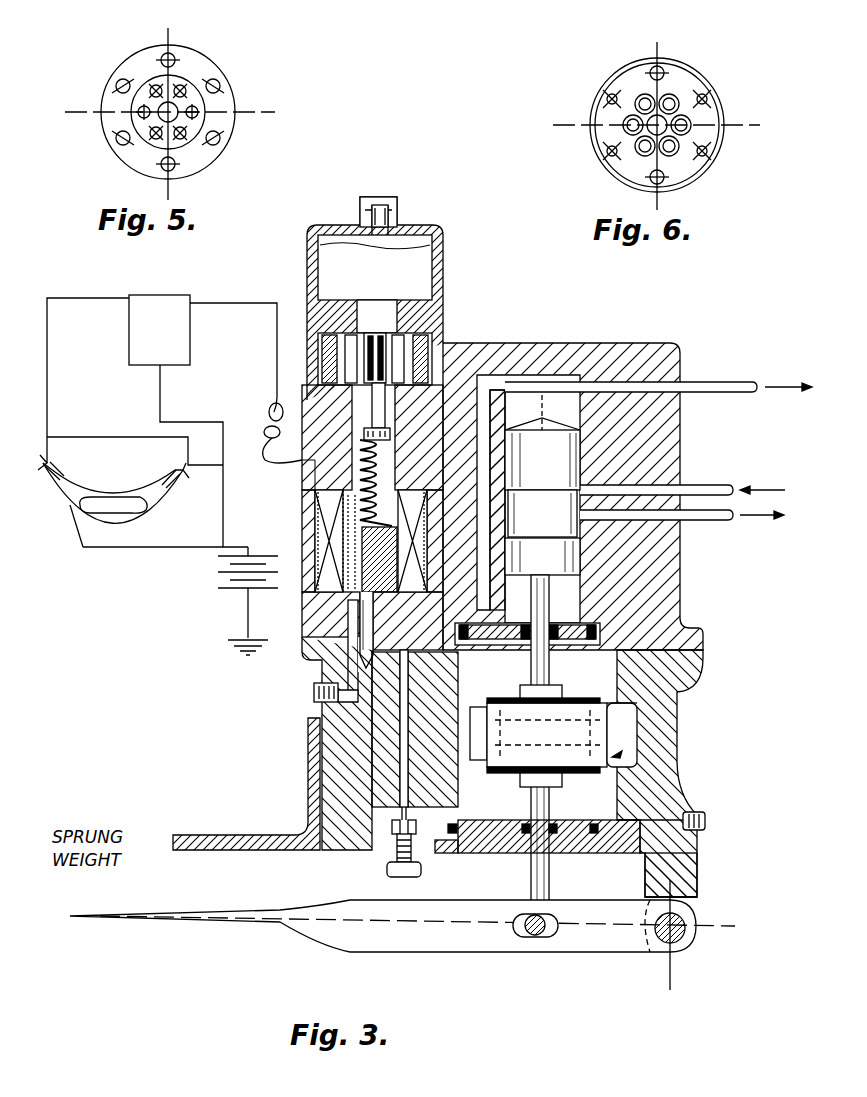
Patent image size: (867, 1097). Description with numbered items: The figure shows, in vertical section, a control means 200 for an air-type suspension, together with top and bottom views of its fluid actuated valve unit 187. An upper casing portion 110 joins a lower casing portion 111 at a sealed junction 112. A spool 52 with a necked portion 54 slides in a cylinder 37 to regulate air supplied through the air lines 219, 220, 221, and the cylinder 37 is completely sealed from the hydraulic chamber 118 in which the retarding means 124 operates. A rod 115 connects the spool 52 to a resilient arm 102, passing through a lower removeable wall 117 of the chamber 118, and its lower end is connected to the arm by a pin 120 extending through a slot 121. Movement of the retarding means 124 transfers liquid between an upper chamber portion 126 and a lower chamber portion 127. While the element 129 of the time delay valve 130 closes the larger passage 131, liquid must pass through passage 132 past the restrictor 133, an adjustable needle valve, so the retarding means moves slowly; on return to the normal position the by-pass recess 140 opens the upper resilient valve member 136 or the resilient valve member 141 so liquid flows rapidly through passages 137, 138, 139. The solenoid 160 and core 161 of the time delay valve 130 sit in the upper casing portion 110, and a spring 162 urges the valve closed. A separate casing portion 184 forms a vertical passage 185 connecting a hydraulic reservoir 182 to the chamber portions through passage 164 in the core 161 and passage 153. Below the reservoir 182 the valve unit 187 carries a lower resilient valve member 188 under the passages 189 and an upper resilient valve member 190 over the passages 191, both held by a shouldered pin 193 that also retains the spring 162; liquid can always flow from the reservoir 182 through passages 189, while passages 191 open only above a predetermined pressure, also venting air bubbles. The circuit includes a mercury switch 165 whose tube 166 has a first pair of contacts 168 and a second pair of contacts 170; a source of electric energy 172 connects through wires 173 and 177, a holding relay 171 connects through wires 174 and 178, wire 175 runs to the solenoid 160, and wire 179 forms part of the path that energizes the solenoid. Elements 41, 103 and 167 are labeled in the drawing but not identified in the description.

In FIG. 5, the fluid actuated valve unit 187 is at (215, 50).
In FIG. 6, the fluid actuated valve unit 187 is at (708, 80).
In FIG. 3, the fluid actuated valve unit 187 is at (440, 345).
In FIG. 5, the passages 189 is at (123, 86).
In FIG. 6, the passages 189 is at (604, 100).
In FIG. 3, the passages 189 is at (325, 350).
In FIG. 5, the shouldered pin 193 is at (180, 109).
In FIG. 6, the shouldered pin 193 is at (668, 118).
In FIG. 3, the shouldered pin 193 is at (373, 405).
In FIG. 5, the upper resilient valve member 190 is at (200, 124).
In FIG. 3, the upper resilient valve member 190 is at (400, 300).
In FIG. 5, the passages 191 is at (150, 135).
In FIG. 6, the passages 191 is at (626, 130).
In FIG. 3, the passages 191 is at (360, 320).
In FIG. 6, the lower resilient valve member 188 is at (680, 160).
In FIG. 3, the lower resilient valve member 188 is at (350, 380).
In FIG. 3, the hydraulic reservoir 182 is at (395, 260).
In FIG. 3, the control means 200 is at (688, 340).
In FIG. 3, the cylinder 37 is at (525, 380).
In FIG. 3, the valve sleeve 41 is at (482, 560).
In FIG. 3, the separate casing portion 184 is at (470, 372).
In FIG. 3, the air line 221 is at (690, 388).
In FIG. 3, the air line 219 is at (690, 488).
In FIG. 3, the air line 220 is at (685, 522).
In FIG. 3, the spool 52 is at (528, 463).
In FIG. 3, the necked portion 54 is at (528, 525).
In FIG. 3, the passage 139 is at (560, 770).
In FIG. 3, the time delay valve 130 is at (300, 532).
In FIG. 3, the solenoid 160 is at (316, 498).
In FIG. 3, the passage 164 is at (345, 545).
In FIG. 3, the core 161 is at (330, 575).
In FIG. 3, the spring 162 is at (265, 432).
In FIG. 3, the vertical passage 185 is at (300, 460).
In FIG. 3, the passage 153 is at (350, 640).
In FIG. 3, the passage 131 is at (322, 745).
In FIG. 3, the element 129 is at (314, 694).
In FIG. 3, the passage 132 is at (372, 770).
In FIG. 3, the restrictor 133 is at (400, 812).
In FIG. 3, the upper resilient valve member 136 is at (498, 703).
In FIG. 3, the passage 137 is at (570, 700).
In FIG. 3, the resilient valve member 141 is at (530, 775).
In FIG. 3, the upper chamber portion 126 is at (680, 675).
In FIG. 3, the passage 138 is at (640, 728).
In FIG. 3, the recess 140 is at (630, 715).
In FIG. 3, the retarding means 124 is at (630, 758).
In FIG. 3, the lower chamber portion 127 is at (690, 812).
In FIG. 3, the lower removeable wall 117 is at (470, 853).
In FIG. 3, the chamber 118 is at (515, 830).
In FIG. 3, the rod 115 is at (540, 885).
In FIG. 3, the upper casing portion 110 is at (672, 625).
In FIG. 3, the sealed junction 112 is at (698, 645).
In FIG. 3, the lower casing portion 111 is at (700, 652).
In FIG. 3, the resilient arm 102 is at (435, 940).
In FIG. 3, the pivot pin 103 is at (685, 935).
In FIG. 3, the pin 120 is at (550, 937).
In FIG. 3, the slot 121 is at (533, 937).
In FIG. 3, the holding relay 171 is at (144, 341).
In FIG. 3, the wire 175 is at (277, 303).
In FIG. 3, the wire 174 is at (50, 460).
In FIG. 3, the wire 178 is at (100, 437).
In FIG. 3, the wire 177 is at (185, 466).
In FIG. 3, the wire 179 is at (160, 380).
In FIG. 3, the wire 173 is at (130, 548).
In FIG. 3, the tube 166 is at (76, 505).
In FIG. 3, the mercury switch 165 is at (113, 490).
In FIG. 3, the mercury 167 is at (110, 510).
In FIG. 3, the first pair of contacts 168 is at (52, 478).
In FIG. 3, the second pair of contacts 170 is at (170, 485).
In FIG. 3, the source of electric energy 172 is at (248, 588).